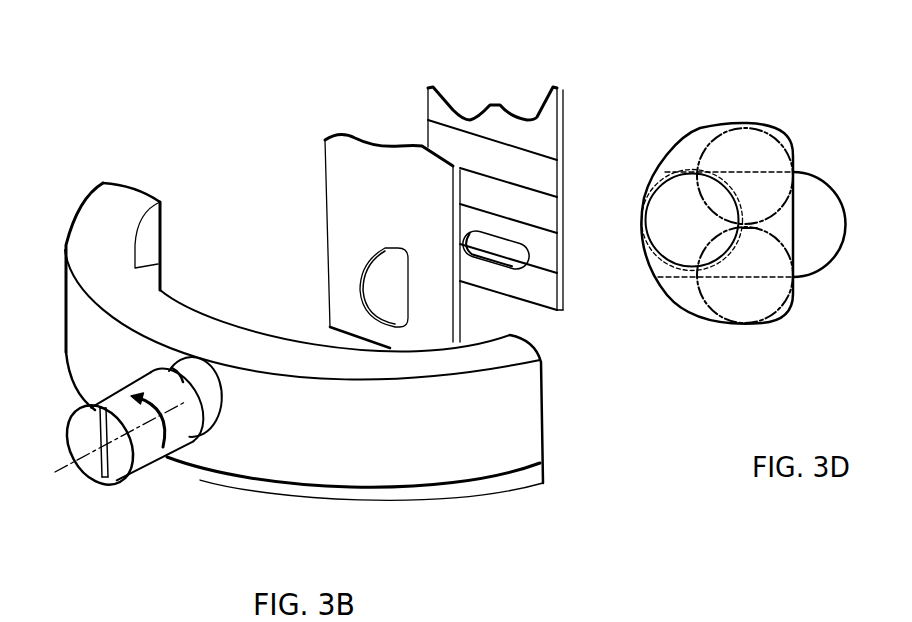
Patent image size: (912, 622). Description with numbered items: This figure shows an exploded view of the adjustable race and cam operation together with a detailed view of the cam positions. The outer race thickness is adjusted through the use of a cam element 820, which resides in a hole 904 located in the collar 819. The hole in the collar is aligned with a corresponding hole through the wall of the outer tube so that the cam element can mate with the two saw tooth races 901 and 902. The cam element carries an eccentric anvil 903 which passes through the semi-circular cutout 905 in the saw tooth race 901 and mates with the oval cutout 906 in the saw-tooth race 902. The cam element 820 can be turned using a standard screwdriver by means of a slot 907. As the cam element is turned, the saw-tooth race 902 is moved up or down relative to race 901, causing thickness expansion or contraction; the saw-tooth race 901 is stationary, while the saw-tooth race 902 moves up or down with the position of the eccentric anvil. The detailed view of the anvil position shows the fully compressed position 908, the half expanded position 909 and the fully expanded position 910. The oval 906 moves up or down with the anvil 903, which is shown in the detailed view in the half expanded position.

In FIG. 3B, the collar 819 is at (470, 426).
In FIG. 3B, the cam element 820 is at (145, 443).
In FIG. 3B, the saw tooth race 901 is at (365, 185).
In FIG. 3B, the saw tooth race 902 is at (492, 140).
In FIG. 3B, the eccentric anvil 903 is at (175, 373).
In FIG. 3D, the eccentric anvil 903 is at (672, 176).
In FIG. 3B, the hole 904 is at (208, 410).
In FIG. 3B, the semi-circular cutout 905 is at (376, 276).
In FIG. 3B, the oval cutout 906 is at (499, 249).
In FIG. 3D, the oval cutout 906 is at (823, 173).
In FIG. 3B, the slot 907 is at (100, 478).
In FIG. 3D, the fully compressed position 908 is at (744, 302).
In FIG. 3D, the half expanded position 909 is at (688, 220).
In FIG. 3D, the fully expanded position 910 is at (748, 138).